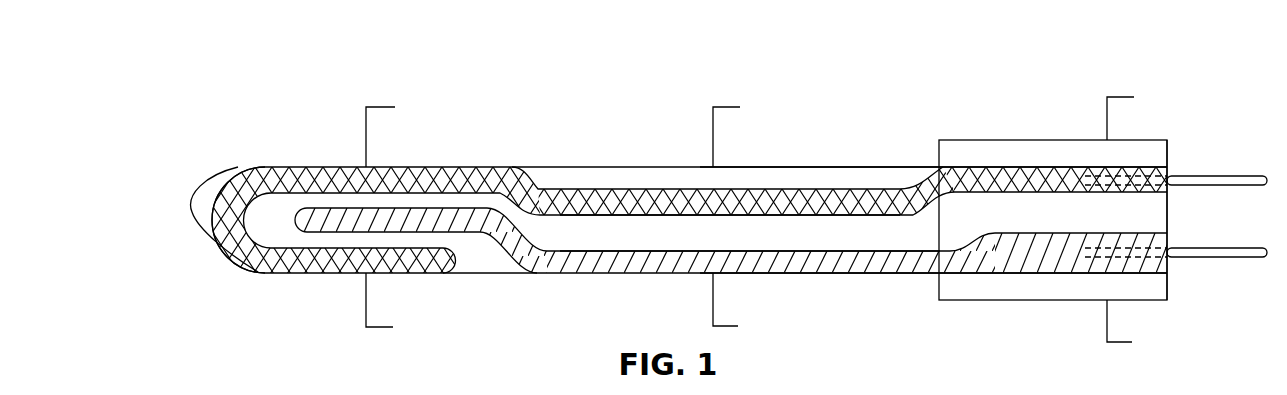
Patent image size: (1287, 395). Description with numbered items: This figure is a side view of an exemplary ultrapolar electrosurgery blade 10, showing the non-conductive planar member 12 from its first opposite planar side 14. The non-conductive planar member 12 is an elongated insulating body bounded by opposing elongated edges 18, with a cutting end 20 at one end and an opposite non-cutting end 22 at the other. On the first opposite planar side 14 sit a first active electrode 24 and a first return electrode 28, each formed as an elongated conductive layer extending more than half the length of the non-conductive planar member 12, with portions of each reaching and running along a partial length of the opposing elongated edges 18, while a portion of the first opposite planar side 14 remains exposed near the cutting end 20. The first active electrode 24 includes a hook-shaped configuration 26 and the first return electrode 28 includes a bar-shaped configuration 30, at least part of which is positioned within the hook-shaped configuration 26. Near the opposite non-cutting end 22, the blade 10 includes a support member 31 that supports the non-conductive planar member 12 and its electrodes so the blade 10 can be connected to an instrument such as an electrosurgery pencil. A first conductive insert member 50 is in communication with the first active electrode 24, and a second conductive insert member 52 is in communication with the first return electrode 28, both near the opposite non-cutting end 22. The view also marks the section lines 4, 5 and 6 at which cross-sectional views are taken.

The ultrapolar electrosurgery blade 10 is at (879, 71).
The non-conductive planar member 12 is at (620, 167).
The first opposite planar side 14 is at (775, 244).
The opposing elongated edges 18 is at (843, 159).
The cutting end 20 is at (183, 200).
The opposite non-cutting end 22 is at (1178, 208).
The first active electrode 24 is at (455, 167).
The hook-shaped configuration 26 is at (243, 250).
The first return electrode 28 is at (582, 273).
The bar-shaped configuration 30 is at (411, 220).
The support member 31 is at (988, 140).
The first conductive insert member 50 is at (1213, 180).
The second conductive insert member 52 is at (1208, 257).
The section line 4- 4 is at (393, 217).
The section line 5- 5 is at (740, 216).
The section line 6- 6 is at (1135, 220).